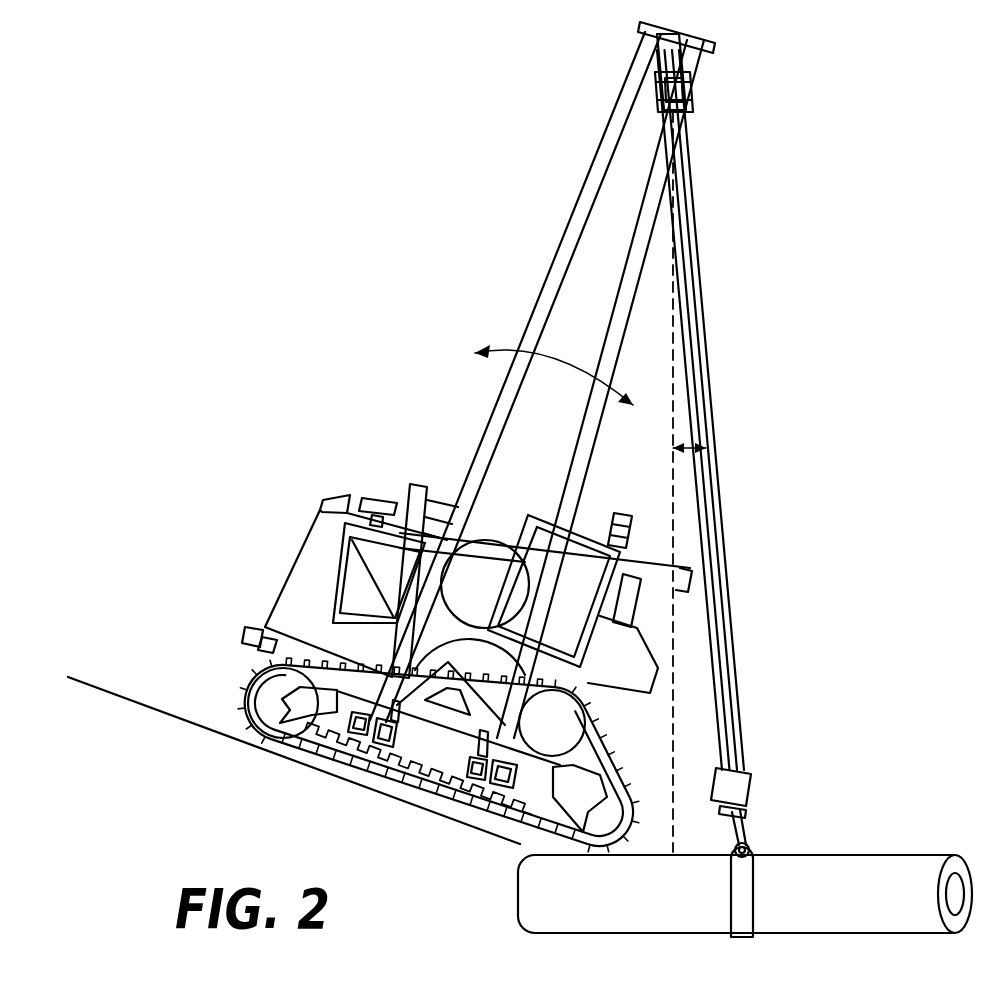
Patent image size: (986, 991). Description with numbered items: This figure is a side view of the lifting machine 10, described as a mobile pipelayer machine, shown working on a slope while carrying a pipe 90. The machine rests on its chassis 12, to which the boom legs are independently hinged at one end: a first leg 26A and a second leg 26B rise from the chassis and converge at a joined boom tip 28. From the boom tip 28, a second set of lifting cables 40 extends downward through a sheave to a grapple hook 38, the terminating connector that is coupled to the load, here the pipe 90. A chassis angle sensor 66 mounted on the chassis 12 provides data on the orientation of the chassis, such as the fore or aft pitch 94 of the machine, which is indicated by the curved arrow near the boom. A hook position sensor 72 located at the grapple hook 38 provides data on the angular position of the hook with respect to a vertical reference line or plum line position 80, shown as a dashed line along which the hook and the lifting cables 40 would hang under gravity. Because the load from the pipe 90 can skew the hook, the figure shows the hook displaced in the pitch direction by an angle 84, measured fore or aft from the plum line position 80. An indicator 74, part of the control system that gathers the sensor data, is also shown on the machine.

The lifting machine 10 is at (305, 430).
The chassis 12 is at (241, 630).
The first leg 26A is at (492, 423).
The second leg 26B is at (574, 458).
The boom tip 28 is at (687, 30).
The grapple hook 38 is at (740, 837).
The lifting cables 40 is at (707, 353).
The chassis angle sensor 66 is at (271, 640).
The hook position sensor 72 is at (750, 785).
The indicator 74 is at (617, 512).
The vertical reference line 80 is at (673, 693).
The angle 84 is at (697, 443).
The pipe 90 is at (522, 888).
The pitch 94 is at (505, 352).